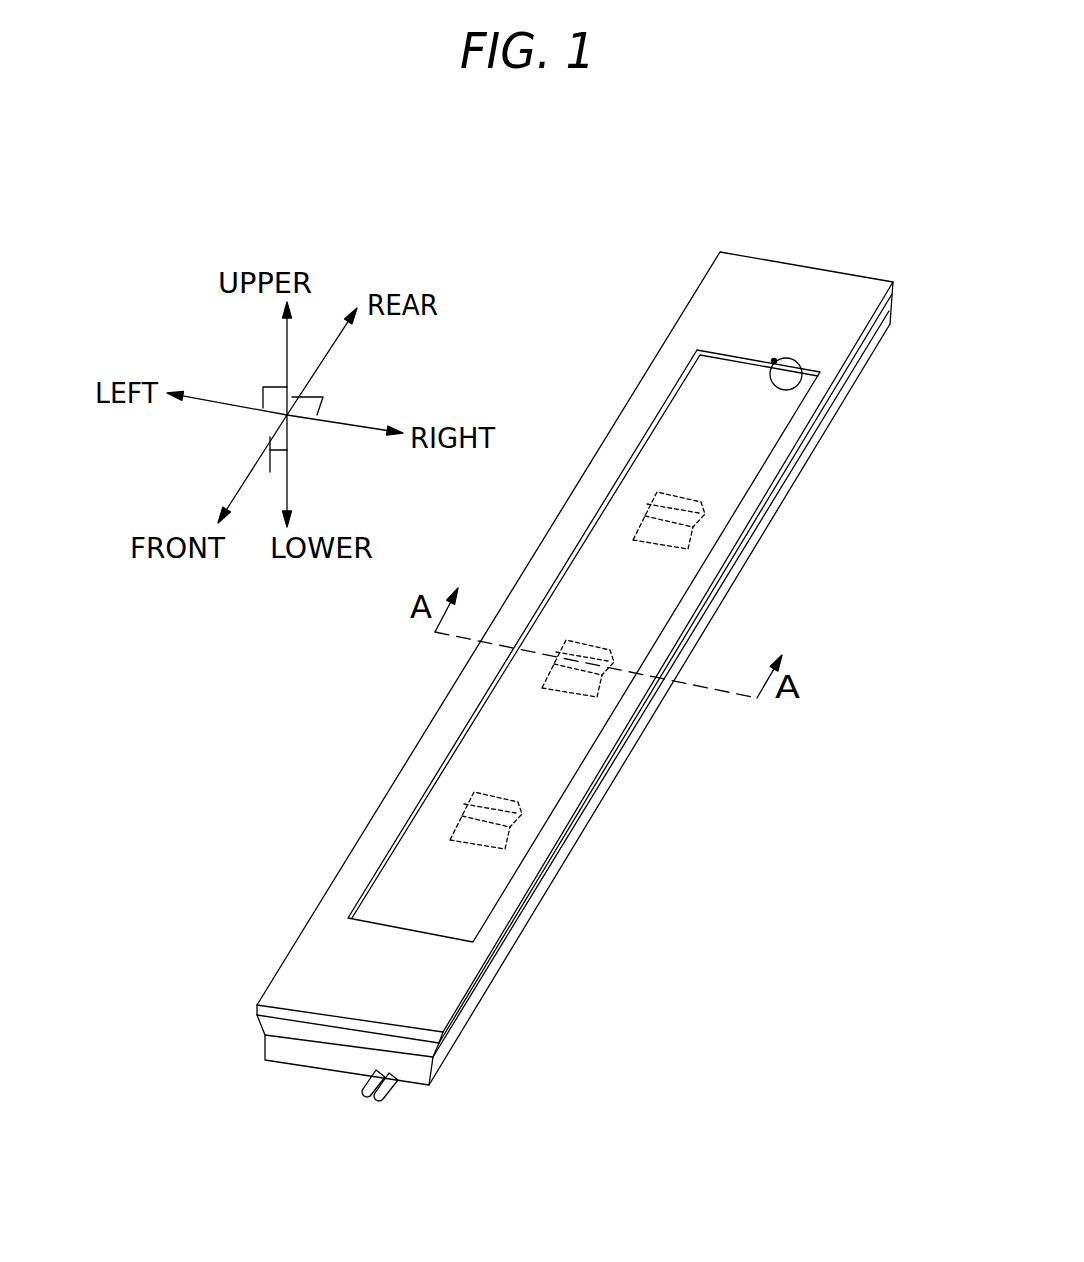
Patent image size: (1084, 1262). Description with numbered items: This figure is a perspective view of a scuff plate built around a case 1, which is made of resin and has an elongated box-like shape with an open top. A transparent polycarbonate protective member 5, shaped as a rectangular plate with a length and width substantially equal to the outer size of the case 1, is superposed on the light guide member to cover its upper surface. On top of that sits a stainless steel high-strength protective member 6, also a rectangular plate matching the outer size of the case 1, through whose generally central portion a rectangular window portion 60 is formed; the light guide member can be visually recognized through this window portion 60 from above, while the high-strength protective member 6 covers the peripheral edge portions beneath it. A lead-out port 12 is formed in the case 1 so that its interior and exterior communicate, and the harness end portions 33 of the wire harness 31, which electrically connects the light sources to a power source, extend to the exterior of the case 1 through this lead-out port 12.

The case 1 is at (870, 345).
The protective member 5 is at (690, 405).
The high-strength protective member 6 is at (773, 295).
The window portion 60 is at (773, 360).
The lead-out port 12 is at (398, 1074).
The wire harness 31 is at (365, 1073).
The harness end portions 33 is at (380, 1085).